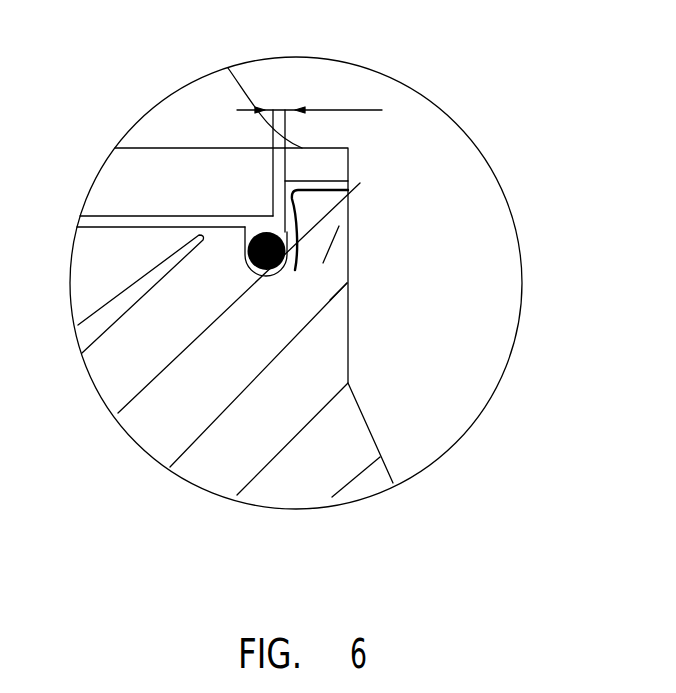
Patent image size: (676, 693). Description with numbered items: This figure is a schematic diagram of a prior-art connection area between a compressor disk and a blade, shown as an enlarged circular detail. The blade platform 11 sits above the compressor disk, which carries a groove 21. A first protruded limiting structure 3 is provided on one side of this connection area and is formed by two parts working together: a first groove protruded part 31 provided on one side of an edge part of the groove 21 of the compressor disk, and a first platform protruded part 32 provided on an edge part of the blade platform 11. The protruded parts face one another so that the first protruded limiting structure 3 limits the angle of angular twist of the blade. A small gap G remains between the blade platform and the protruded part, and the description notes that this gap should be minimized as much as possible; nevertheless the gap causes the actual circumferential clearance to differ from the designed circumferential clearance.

The first protruded limiting structure 3 is at (360, 183).
The blade platform 11 is at (347, 148).
The groove 21 is at (322, 220).
The first groove protruded part 31 is at (295, 270).
The first platform protruded part 32 is at (322, 189).